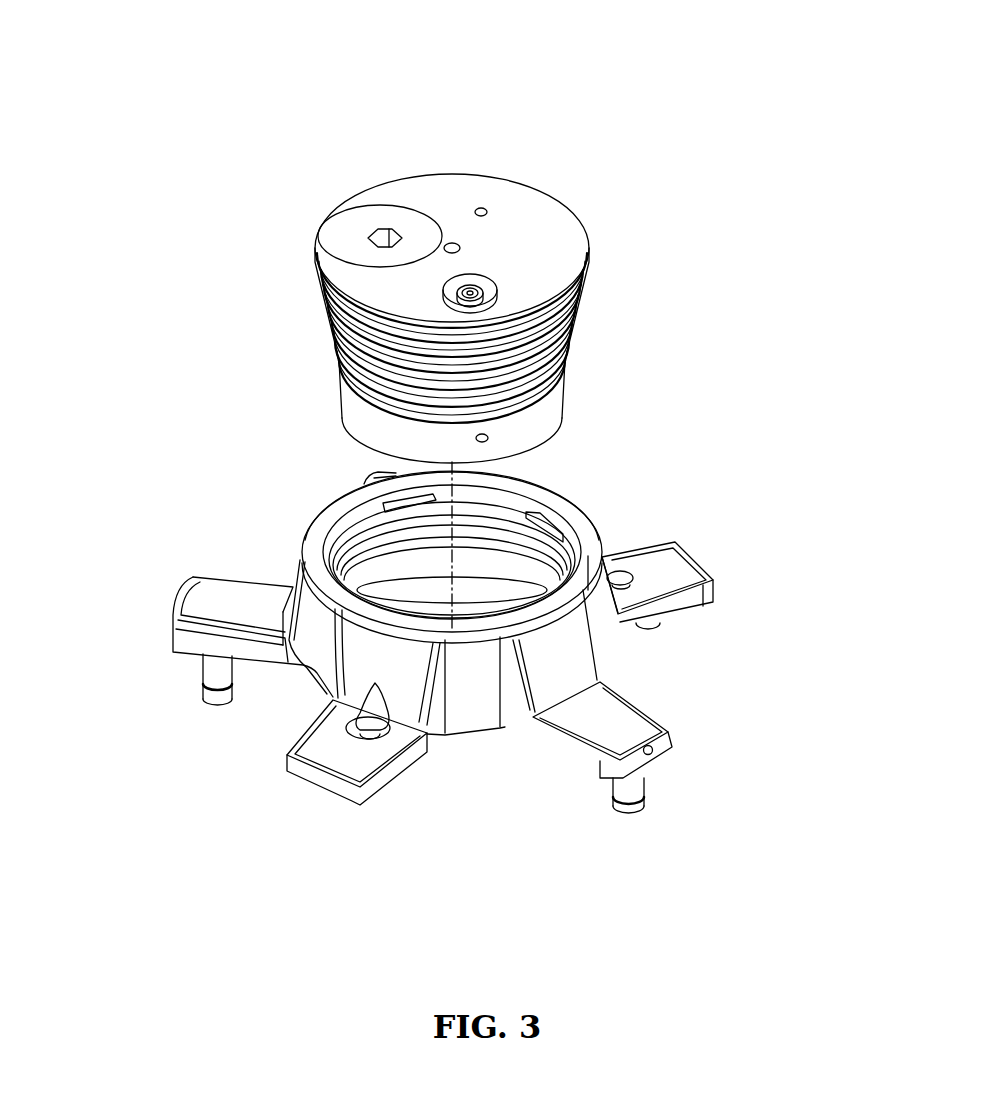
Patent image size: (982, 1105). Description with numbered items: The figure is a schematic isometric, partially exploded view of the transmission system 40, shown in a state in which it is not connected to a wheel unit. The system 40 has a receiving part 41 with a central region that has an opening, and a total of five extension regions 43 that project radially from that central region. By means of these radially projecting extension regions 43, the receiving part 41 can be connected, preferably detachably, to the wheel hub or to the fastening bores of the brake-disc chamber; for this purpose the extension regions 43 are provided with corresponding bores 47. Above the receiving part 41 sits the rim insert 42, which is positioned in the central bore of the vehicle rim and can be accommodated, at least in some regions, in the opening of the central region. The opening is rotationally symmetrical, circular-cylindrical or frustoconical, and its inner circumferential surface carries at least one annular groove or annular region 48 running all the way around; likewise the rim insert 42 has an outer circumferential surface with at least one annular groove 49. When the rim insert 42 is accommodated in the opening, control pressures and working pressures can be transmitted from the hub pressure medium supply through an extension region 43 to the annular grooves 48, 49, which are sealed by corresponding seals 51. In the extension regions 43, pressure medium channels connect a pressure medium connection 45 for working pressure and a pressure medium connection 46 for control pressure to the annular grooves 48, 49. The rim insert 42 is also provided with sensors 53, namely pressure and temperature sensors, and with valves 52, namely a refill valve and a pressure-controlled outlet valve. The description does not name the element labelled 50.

The transmission system 40 is at (370, 166).
The receiving part 41 is at (290, 496).
The rim insert 42 is at (556, 238).
The extension regions 43 is at (383, 477).
The pressure medium connection for working pressure 45 is at (212, 680).
The pressure medium connection for control pressure 46 is at (633, 785).
The bores 47 is at (620, 587).
The annular groove 48 is at (517, 508).
The annular groove 49 is at (585, 300).
The slot 50 is at (400, 505).
The seals 51 is at (588, 280).
The valves 52 is at (467, 290).
The sensors 53 is at (357, 233).